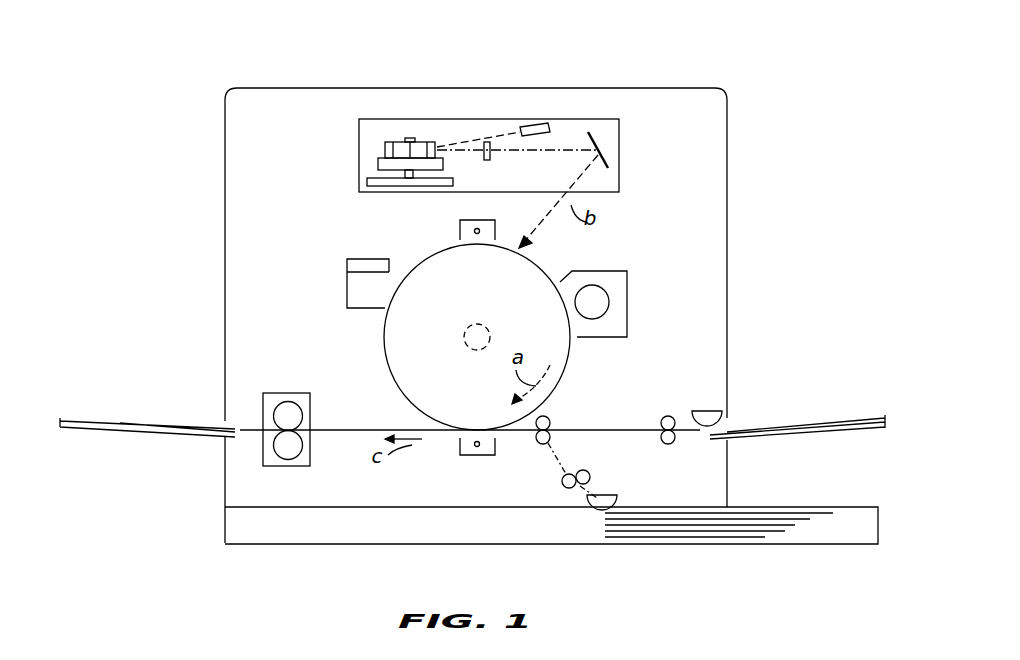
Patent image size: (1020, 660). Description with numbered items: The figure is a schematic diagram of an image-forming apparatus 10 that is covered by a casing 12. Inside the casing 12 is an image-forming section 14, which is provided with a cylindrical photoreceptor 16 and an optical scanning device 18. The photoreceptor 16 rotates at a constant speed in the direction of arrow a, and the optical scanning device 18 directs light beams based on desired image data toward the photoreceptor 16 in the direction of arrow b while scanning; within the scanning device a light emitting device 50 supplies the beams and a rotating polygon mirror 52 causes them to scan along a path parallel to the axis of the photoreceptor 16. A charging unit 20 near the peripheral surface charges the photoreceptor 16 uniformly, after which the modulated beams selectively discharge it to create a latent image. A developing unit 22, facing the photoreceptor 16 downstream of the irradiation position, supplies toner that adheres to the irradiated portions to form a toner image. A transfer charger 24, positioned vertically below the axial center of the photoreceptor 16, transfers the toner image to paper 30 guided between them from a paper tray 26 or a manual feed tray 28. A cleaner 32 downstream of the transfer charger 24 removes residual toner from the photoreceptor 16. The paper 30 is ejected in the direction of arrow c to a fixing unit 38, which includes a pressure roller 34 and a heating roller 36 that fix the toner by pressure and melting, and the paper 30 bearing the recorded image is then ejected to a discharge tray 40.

The image-forming apparatus 10 is at (681, 62).
The casing 12 is at (729, 152).
The image-forming section 14 is at (298, 165).
The photoreceptor 16 is at (390, 373).
The optical scanning device 18 is at (620, 148).
The charging unit 20 is at (458, 224).
The developing unit 22 is at (628, 290).
The transfer charger 24 is at (477, 456).
The paper tray 26 is at (822, 506).
The manual feed tray 28 is at (808, 436).
The paper 30 is at (648, 432).
The cleaner 32 is at (347, 288).
The pressure roller 34 is at (300, 416).
The heating roller 36 is at (291, 458).
The fixing unit 38 is at (292, 393).
The discharge tray 40 is at (150, 433).
The light emitting device 50 is at (548, 126).
The polygon mirror 52 is at (378, 163).